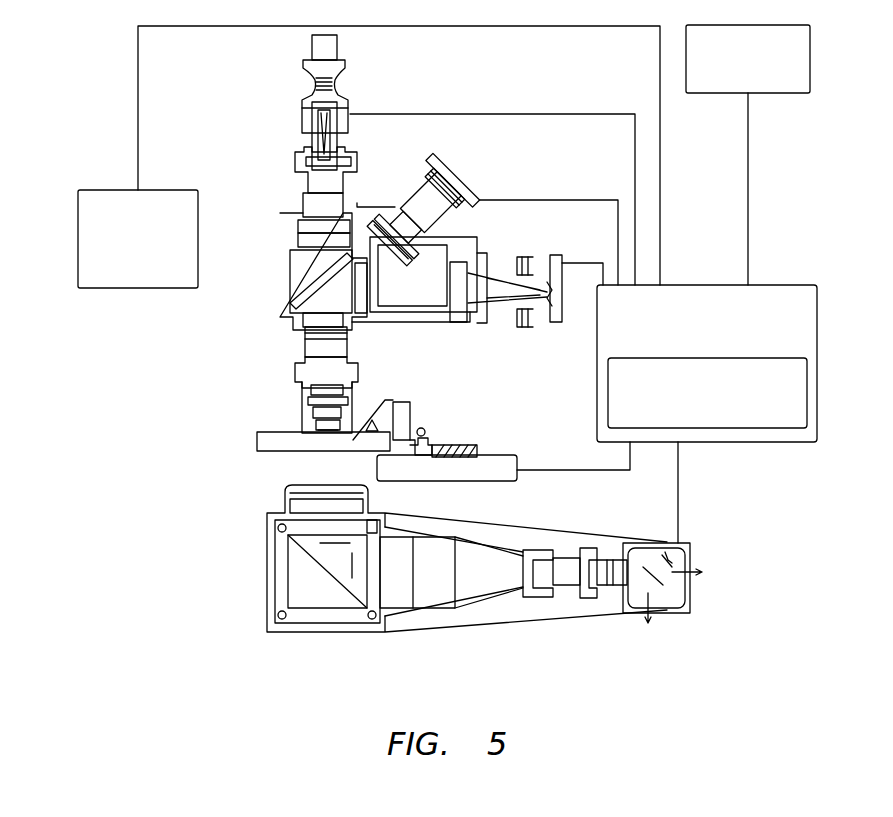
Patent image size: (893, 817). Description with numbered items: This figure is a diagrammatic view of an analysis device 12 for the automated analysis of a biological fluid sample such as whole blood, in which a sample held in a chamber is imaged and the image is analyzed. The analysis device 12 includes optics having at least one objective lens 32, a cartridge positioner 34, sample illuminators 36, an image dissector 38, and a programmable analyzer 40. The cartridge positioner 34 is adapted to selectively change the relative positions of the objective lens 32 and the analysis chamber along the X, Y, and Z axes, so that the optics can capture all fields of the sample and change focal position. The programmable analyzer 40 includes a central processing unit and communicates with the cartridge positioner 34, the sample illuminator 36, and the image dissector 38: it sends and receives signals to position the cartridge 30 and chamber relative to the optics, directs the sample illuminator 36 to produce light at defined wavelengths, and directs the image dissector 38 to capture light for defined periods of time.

The analysis device 12 is at (143, 360).
The cartridge 30 is at (275, 423).
The objective lens 32 is at (300, 406).
The cartridge positioner 34 is at (448, 445).
The sample illuminator 36 is at (348, 92).
The image dissector 38 is at (453, 160).
The programmable analyzer 40 is at (809, 293).